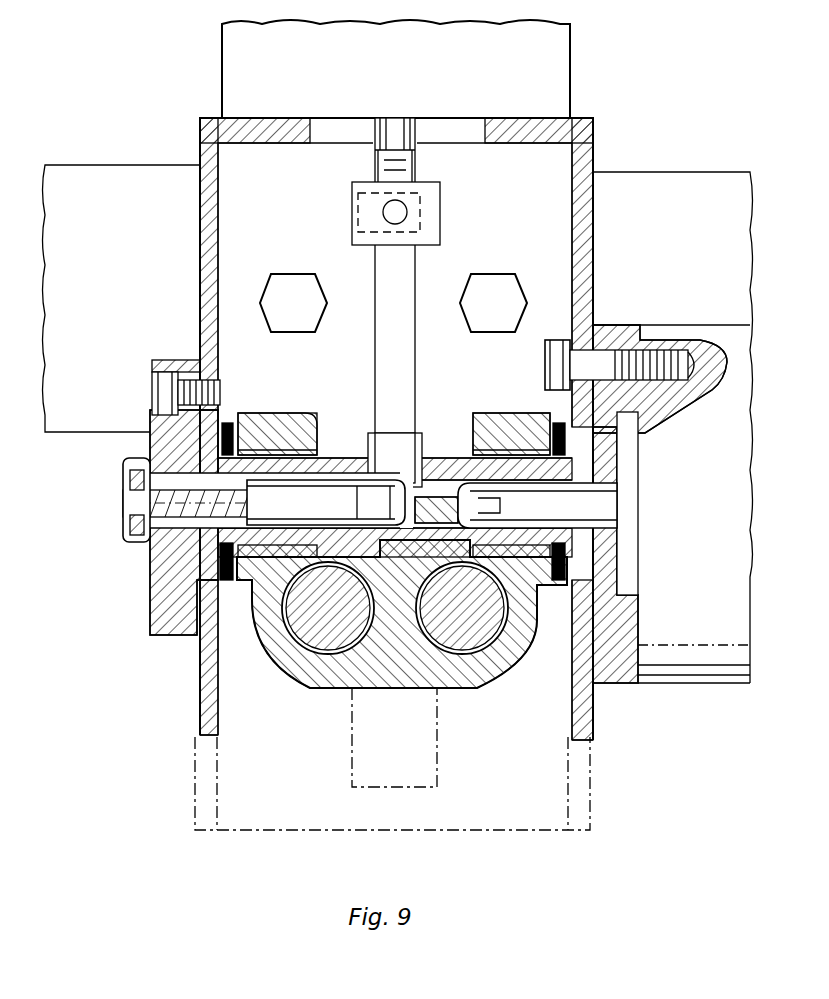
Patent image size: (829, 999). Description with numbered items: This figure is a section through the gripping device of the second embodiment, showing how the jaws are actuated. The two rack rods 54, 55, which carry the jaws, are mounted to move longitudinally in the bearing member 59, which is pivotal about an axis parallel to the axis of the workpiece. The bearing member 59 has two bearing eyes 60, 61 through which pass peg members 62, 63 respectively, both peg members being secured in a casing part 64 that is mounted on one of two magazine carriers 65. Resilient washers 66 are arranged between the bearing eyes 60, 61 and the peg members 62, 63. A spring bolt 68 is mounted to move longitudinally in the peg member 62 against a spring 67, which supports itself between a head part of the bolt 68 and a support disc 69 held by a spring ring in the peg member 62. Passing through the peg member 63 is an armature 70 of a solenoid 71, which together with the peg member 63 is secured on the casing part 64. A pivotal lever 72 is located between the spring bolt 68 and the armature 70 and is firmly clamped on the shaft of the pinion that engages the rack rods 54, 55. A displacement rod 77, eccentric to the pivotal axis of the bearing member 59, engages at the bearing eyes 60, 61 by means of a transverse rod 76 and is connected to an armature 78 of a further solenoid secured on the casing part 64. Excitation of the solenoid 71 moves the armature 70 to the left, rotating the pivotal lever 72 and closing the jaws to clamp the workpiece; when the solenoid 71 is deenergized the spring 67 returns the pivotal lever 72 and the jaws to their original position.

The rack rod 54 is at (310, 650).
The rack rod 55 is at (470, 640).
The bearing member 59 is at (400, 688).
The bearing eye 60 is at (278, 432).
The bearing eye 61 is at (510, 432).
The peg member 62 is at (176, 640).
The peg member 63 is at (625, 668).
The casing part 64 is at (593, 238).
The magazine carrier 65 is at (655, 172).
The resilient washer 66 is at (230, 580).
The spring 67 is at (140, 530).
The spring bolt 68 is at (360, 478).
The support disc 69 is at (150, 490).
The armature 70 is at (603, 503).
The solenoid 71 is at (705, 668).
The pivotal lever 72 is at (433, 525).
The transverse rod 76 is at (440, 455).
The displacement rod 77 is at (403, 347).
The armature 78 is at (418, 248).